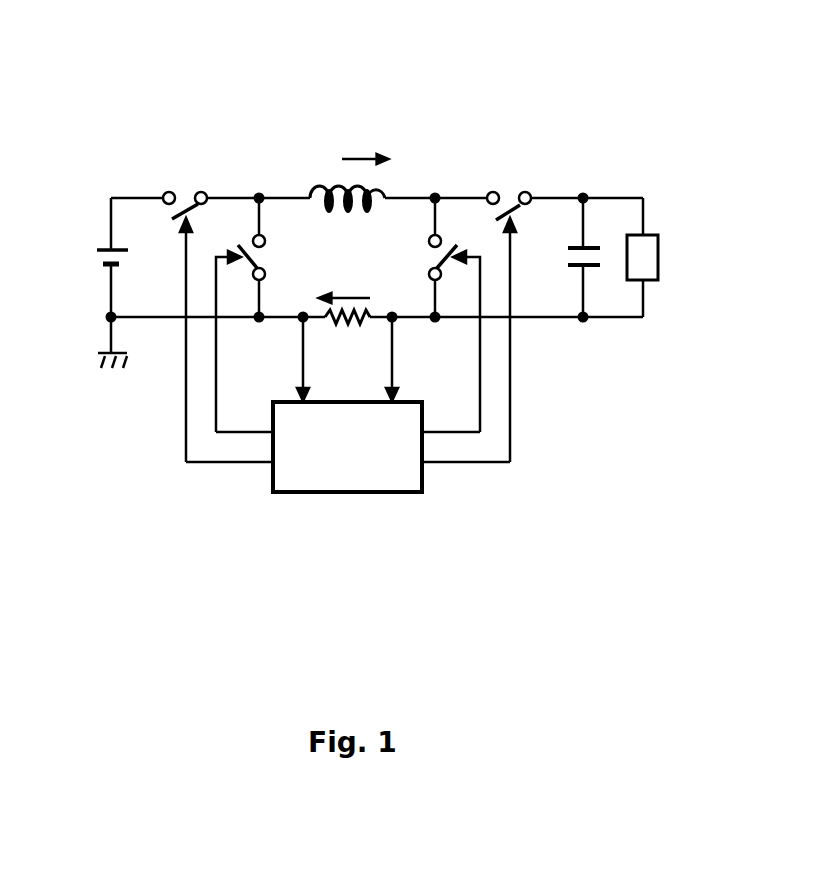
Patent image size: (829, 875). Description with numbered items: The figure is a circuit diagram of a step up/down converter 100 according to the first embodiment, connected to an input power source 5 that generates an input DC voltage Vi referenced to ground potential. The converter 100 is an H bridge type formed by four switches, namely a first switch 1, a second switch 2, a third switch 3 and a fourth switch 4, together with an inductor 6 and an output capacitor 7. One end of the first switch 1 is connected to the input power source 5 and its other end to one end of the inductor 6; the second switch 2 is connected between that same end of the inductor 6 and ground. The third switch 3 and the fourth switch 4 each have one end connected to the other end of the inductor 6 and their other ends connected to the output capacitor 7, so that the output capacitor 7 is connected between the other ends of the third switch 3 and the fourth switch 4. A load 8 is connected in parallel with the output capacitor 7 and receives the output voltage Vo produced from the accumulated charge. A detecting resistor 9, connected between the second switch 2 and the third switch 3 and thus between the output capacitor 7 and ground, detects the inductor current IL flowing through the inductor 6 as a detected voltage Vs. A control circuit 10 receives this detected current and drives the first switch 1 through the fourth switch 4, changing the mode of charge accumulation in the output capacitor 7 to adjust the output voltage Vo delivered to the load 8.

The step up/down converter 100 is at (418, 96).
The first switch 1 is at (187, 192).
The second switch 2 is at (264, 257).
The third switch 3 is at (428, 257).
The fourth switch 4 is at (510, 192).
The input power source 5 is at (98, 258).
The inductor 6 is at (336, 182).
The output capacitor 7 is at (572, 258).
The load 8 is at (660, 257).
The detecting resistor 9 is at (345, 323).
The control circuit 10 is at (350, 494).